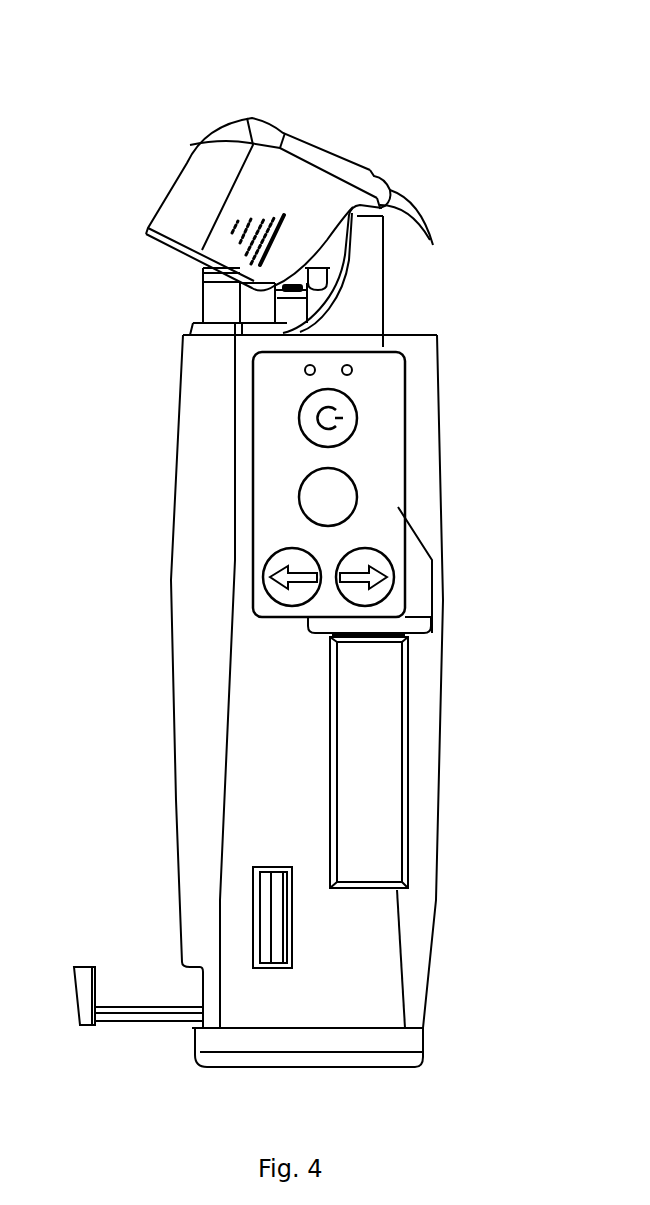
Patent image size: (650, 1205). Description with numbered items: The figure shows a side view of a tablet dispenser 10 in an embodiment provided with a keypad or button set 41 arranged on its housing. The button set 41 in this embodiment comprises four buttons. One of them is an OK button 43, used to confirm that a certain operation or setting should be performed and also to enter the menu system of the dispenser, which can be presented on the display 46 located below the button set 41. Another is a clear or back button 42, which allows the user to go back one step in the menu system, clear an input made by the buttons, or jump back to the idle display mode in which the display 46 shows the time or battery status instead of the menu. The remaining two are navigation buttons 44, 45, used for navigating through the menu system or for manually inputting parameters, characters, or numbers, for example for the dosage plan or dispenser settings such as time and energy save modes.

The tablet dispenser 10 is at (98, 127).
The button set 41 is at (415, 518).
The clear or back button 42 is at (350, 421).
The OK button 43 is at (350, 503).
The navigation button 44 is at (380, 590).
The navigation button 45 is at (268, 560).
The display 46 is at (372, 753).